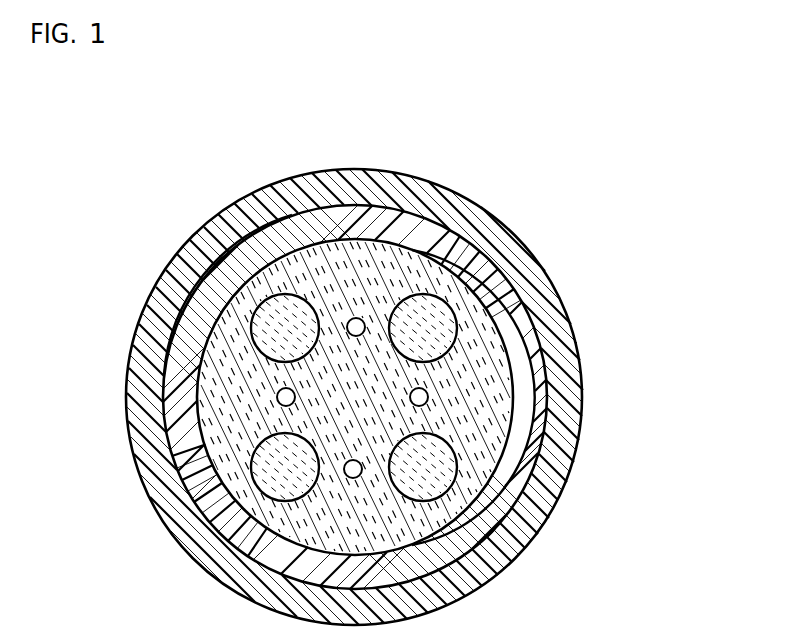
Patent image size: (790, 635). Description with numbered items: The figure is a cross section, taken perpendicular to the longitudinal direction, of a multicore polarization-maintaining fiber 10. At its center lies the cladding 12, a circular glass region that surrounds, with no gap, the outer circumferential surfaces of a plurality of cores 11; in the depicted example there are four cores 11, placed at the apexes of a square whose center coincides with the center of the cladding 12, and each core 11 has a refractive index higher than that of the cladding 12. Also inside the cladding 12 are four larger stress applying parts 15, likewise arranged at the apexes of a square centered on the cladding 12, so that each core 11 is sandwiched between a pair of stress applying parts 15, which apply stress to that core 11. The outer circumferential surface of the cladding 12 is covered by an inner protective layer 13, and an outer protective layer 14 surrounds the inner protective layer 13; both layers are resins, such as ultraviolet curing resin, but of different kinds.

The multicore polarization-maintaining fiber 10 is at (618, 238).
The core 11 is at (363, 322).
The cladding 12 is at (341, 262).
The inner protective layer 13 is at (545, 395).
The outer protective layer 14 is at (568, 408).
The stress applying part 15 is at (270, 332).